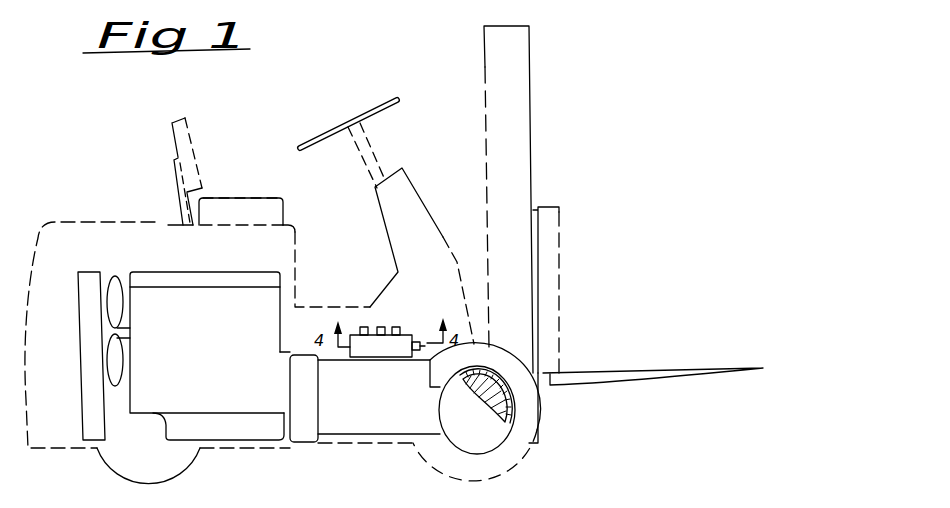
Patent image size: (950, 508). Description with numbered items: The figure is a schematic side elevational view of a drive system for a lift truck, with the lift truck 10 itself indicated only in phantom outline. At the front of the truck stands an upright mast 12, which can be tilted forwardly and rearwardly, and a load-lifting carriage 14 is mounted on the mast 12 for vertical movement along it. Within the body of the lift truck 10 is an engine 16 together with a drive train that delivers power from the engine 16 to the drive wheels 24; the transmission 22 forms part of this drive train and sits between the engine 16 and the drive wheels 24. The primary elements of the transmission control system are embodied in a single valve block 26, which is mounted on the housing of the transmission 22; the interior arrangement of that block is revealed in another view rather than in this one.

The lift truck 10 is at (73, 222).
The mast 12 is at (533, 169).
The load-lifting carriage 14 is at (559, 286).
The engine 16 is at (163, 280).
The transmission 22 is at (367, 434).
The drive wheels 24 is at (505, 470).
The valve block 26 is at (403, 336).